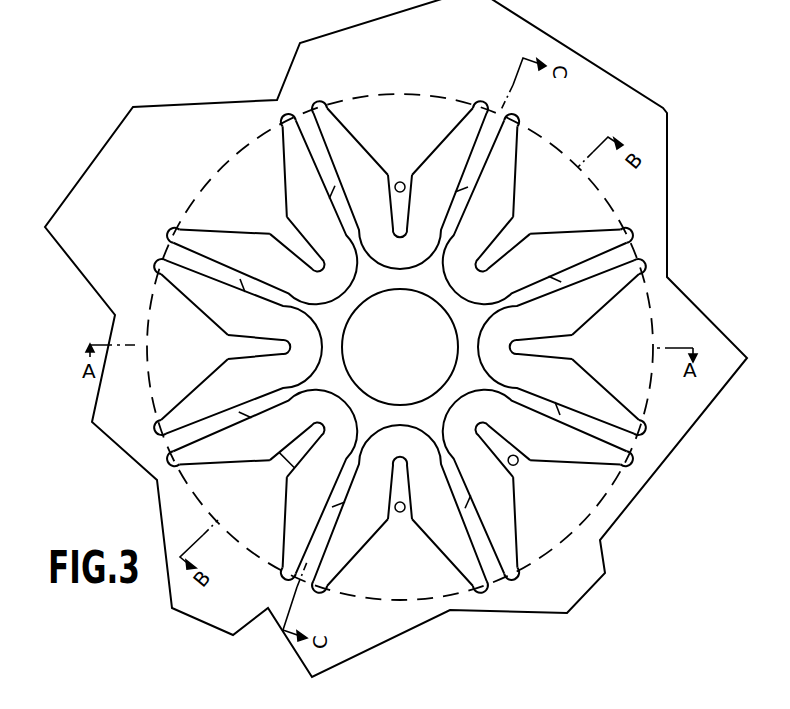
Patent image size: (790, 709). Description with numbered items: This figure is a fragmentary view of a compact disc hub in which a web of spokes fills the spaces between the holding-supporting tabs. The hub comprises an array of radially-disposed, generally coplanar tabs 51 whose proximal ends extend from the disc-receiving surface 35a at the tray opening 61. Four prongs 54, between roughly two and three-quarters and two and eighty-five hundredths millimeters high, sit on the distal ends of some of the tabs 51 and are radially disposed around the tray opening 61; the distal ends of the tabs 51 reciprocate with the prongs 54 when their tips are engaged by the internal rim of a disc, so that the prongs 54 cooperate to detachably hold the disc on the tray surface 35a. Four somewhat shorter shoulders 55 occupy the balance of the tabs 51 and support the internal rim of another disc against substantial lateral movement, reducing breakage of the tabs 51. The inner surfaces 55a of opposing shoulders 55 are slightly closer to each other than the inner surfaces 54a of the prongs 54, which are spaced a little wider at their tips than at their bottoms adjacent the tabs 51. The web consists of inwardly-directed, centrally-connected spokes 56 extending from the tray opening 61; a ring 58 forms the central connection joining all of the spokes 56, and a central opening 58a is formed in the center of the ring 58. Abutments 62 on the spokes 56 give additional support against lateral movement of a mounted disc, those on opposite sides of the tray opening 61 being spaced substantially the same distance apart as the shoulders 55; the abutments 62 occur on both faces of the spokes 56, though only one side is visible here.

The disc-receiving surface 35a is at (153, 197).
The tab 51 is at (252, 211).
The prong 54 is at (397, 243).
The inner surface of prong 54a is at (390, 180).
The shoulder 55 is at (319, 268).
The inner surface of shoulder 55a is at (513, 231).
The spoke 56 is at (268, 300).
The ring 58 is at (373, 410).
The central opening 58a is at (434, 301).
The tray opening 61 is at (430, 97).
The abutment 62 is at (457, 195).